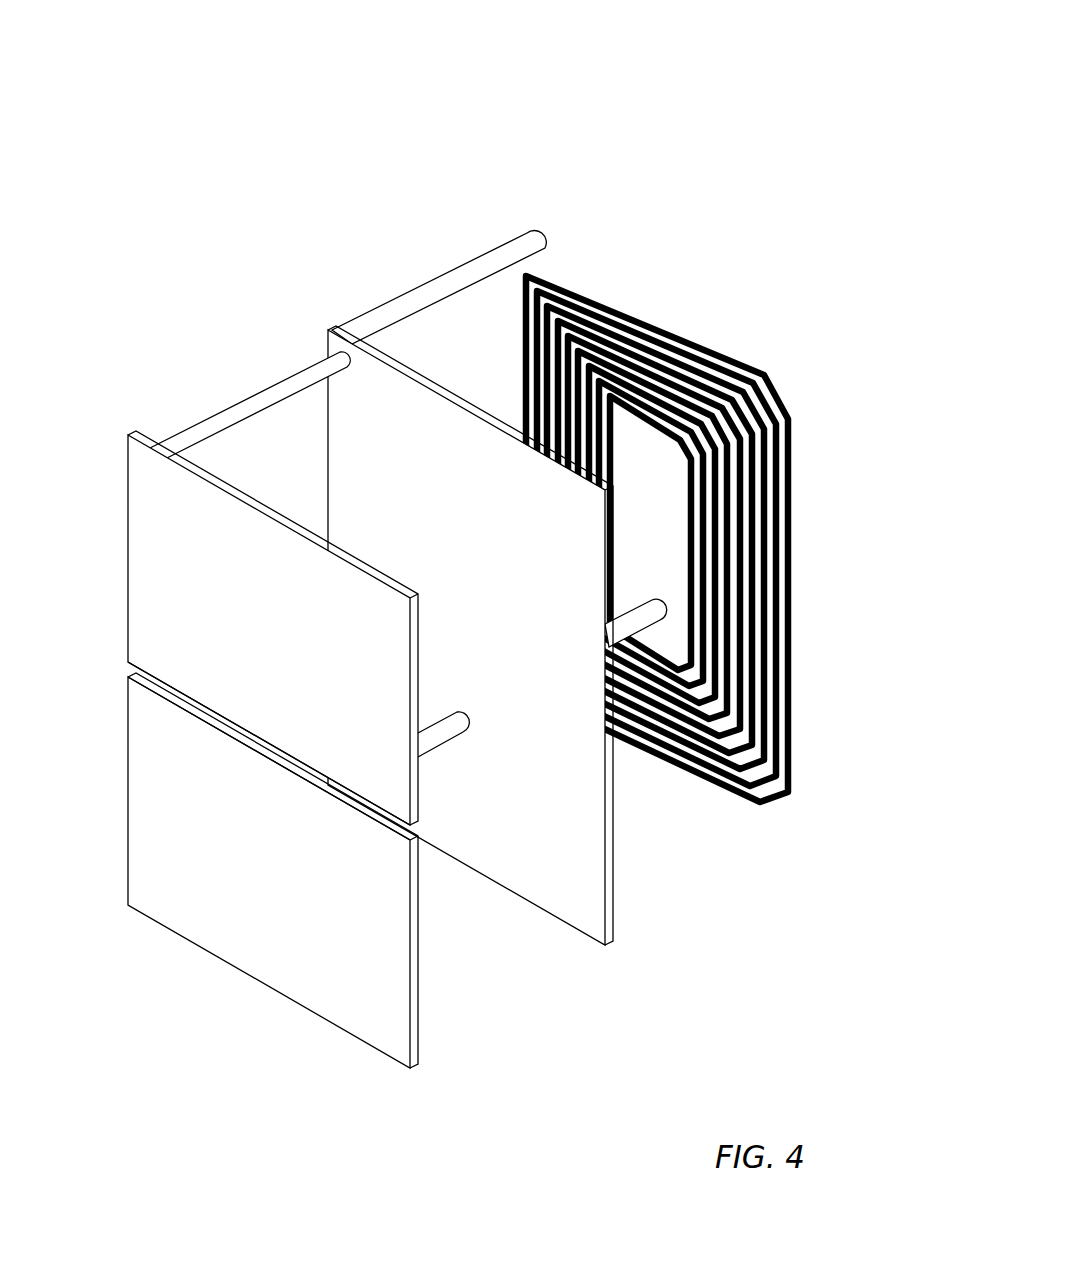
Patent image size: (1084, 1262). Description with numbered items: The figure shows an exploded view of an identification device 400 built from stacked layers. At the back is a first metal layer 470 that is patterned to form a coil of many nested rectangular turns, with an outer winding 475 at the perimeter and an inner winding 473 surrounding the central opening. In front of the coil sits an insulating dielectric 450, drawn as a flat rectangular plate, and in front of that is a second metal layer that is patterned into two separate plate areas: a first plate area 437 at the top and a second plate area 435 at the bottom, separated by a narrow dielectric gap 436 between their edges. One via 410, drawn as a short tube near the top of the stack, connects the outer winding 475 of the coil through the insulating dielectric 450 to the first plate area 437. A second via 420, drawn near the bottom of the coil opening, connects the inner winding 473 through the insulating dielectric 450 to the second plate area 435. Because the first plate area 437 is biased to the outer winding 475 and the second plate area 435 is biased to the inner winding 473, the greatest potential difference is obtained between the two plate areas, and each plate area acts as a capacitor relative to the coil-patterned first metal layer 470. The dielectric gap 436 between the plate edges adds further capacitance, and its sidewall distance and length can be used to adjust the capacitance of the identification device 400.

The identification device 400 is at (315, 140).
The via 410 is at (468, 286).
The second via 420 is at (627, 623).
The second plate area 435 is at (298, 890).
The dielectric gap 436 is at (124, 662).
The first plate area 437 is at (352, 750).
The insulating dielectric 450 is at (532, 703).
The first metal layer 470 is at (739, 539).
The inner winding 473 is at (690, 636).
The outer winding 475 is at (773, 372).